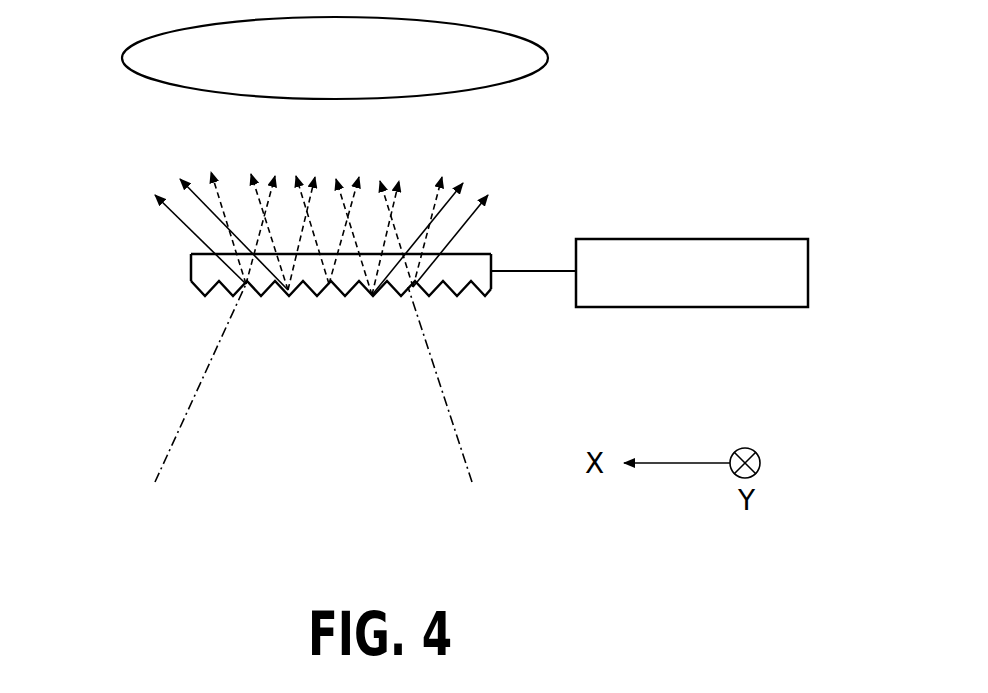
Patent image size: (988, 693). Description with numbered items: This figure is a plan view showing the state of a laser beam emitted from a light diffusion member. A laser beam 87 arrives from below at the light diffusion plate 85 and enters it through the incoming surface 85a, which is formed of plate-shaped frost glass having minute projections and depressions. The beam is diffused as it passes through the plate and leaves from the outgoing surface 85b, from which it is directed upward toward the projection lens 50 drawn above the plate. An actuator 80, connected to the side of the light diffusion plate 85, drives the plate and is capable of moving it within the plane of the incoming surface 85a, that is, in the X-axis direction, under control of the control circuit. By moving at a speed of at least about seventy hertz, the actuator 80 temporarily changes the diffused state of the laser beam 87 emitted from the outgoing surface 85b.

The projection lens 50 is at (548, 58).
The light diffusion plate 85 is at (313, 278).
The incoming surface 85a is at (489, 296).
The outgoing surface 85b is at (481, 254).
The actuator 80 is at (808, 271).
The laser beam 87 is at (167, 453).